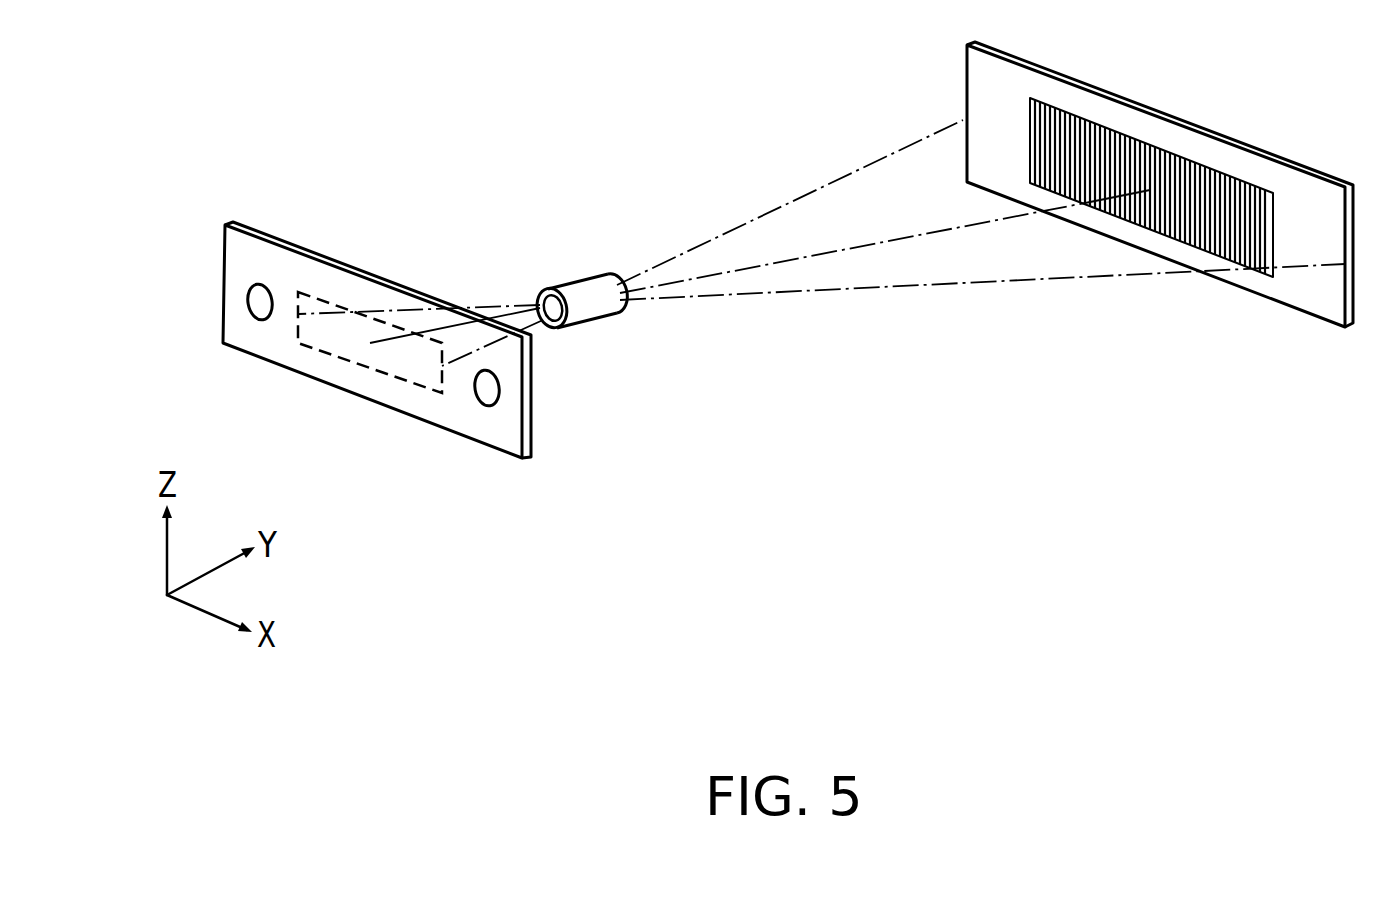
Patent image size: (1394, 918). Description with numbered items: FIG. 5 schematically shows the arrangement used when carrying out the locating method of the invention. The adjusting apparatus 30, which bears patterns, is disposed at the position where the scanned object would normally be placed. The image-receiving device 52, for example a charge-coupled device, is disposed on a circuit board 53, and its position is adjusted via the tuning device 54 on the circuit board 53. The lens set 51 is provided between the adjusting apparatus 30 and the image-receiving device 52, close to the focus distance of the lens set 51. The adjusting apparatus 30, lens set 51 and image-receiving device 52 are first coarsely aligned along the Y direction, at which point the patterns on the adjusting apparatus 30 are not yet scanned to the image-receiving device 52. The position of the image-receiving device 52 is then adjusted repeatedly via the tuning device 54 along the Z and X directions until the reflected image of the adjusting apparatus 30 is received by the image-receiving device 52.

The adjusting apparatus 30 is at (1312, 212).
The lens set 51 is at (588, 312).
The image-receiving device 52 is at (327, 348).
The circuit board 53 is at (247, 252).
The tuning device 54 is at (250, 304).